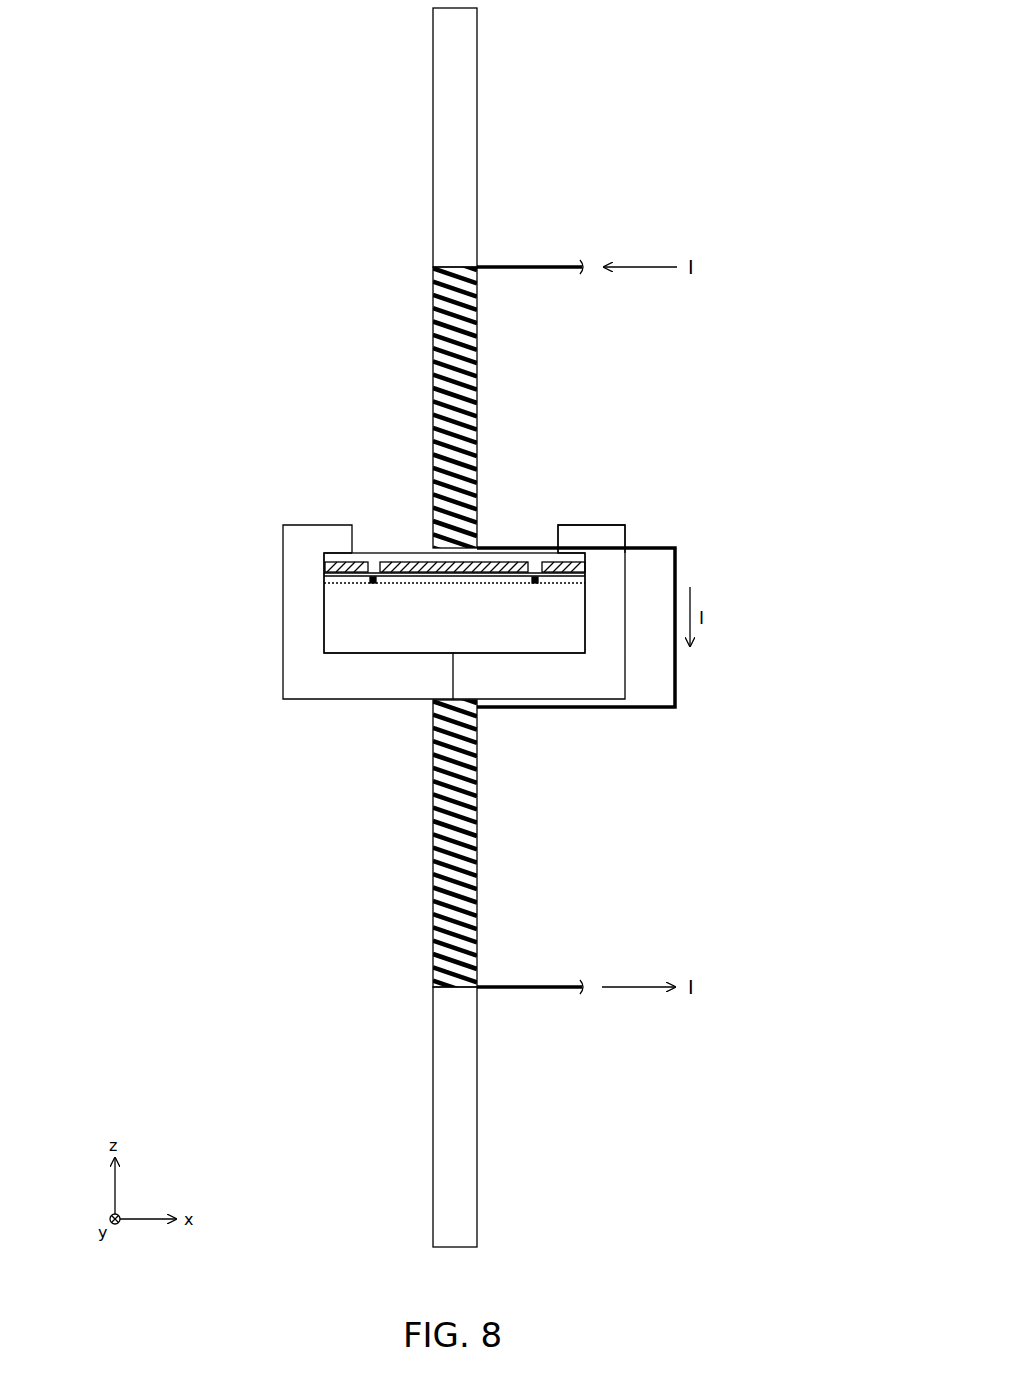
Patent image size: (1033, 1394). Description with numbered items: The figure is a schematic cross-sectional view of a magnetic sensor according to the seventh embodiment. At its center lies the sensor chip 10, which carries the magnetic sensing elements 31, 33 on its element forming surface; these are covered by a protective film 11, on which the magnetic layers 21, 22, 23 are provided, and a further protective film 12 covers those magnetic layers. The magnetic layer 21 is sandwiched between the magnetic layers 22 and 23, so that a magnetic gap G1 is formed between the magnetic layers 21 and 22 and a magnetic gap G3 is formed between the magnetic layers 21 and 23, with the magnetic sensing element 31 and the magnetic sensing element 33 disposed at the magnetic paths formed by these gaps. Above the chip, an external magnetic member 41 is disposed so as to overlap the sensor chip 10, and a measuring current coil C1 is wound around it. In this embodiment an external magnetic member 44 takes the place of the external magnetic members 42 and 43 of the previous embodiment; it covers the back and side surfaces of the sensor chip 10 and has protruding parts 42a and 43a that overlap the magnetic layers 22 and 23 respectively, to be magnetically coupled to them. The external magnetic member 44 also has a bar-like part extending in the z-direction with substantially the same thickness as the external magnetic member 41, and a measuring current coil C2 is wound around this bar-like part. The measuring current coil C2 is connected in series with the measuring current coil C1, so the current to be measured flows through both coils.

The external magnetic member 41 is at (448, 40).
The measuring current coil C1 is at (437, 315).
The measuring current coil C2 is at (470, 835).
The external magnetic member 44 is at (448, 1105).
The external magnetic member 42 is at (318, 683).
The protruding part 42a is at (300, 537).
The external magnetic member 43 is at (597, 690).
The protruding part 43a is at (605, 532).
The sensor chip 10 is at (575, 618).
The protective film 11 is at (585, 578).
The protective film 12 is at (482, 529).
The magnetic layer 21 is at (405, 560).
The magnetic layer 22 is at (347, 558).
The magnetic layer 23 is at (560, 565).
The magnetic gap G1 is at (378, 546).
The magnetic gap G3 is at (531, 540).
The magnetic sensing element 31 is at (373, 584).
The magnetic sensing element 33 is at (535, 584).